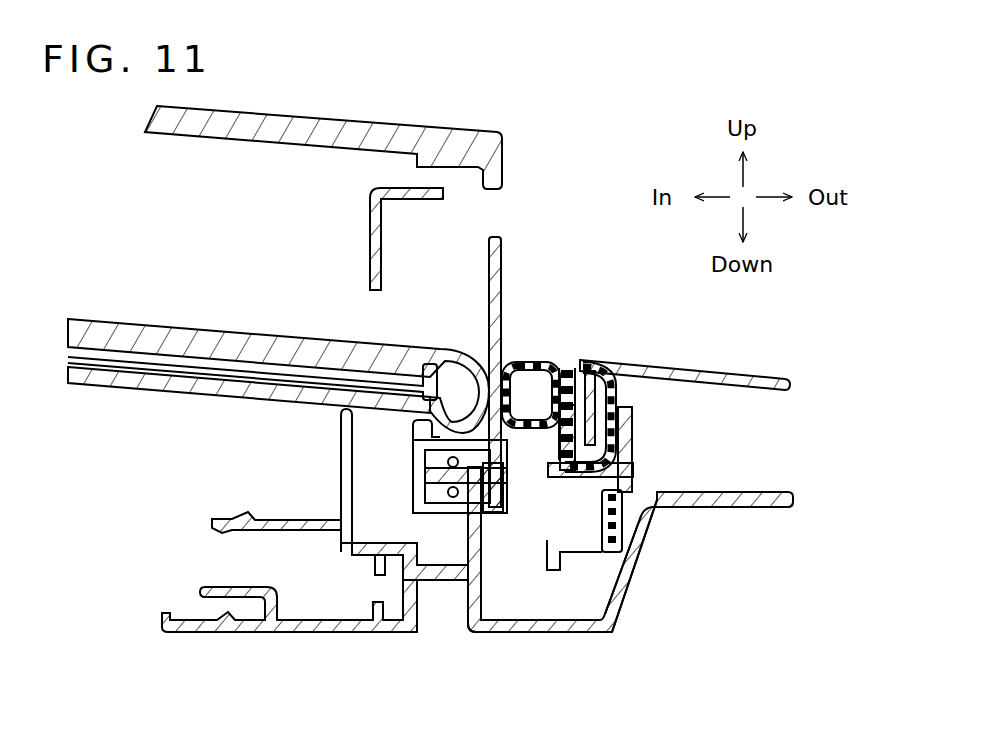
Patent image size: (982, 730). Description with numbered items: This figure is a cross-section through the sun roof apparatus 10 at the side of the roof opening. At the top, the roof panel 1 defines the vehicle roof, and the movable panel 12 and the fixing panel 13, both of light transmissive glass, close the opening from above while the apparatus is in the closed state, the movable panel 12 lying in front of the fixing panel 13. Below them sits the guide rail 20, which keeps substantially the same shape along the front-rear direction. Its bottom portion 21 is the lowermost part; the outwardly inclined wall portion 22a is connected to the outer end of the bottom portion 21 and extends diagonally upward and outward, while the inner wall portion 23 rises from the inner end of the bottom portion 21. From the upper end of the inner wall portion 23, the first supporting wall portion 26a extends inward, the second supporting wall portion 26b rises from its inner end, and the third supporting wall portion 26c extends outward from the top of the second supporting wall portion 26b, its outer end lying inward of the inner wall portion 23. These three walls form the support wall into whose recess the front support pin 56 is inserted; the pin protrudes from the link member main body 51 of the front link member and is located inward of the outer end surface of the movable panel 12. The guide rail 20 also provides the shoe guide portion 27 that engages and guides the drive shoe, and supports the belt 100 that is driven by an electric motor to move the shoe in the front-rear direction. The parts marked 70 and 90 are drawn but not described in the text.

The roof panel 1 is at (678, 365).
The sun roof apparatus 10 is at (604, 95).
The movable panel 12 is at (312, 118).
The fixing panel 13 is at (220, 328).
The guide rail 20 is at (323, 633).
The bottom portion 21 is at (535, 634).
The outwardly inclined wall portion 22a is at (637, 587).
The inner wall portion 23 is at (466, 598).
The first supporting wall portion 26a is at (443, 520).
The second supporting wall portion 26b is at (420, 474).
The third supporting wall portion 26c is at (413, 425).
The shoe guide portion 27 is at (341, 457).
The link member main body 51 is at (502, 252).
The front support pin 56 is at (506, 492).
The deflector 70 is at (370, 212).
The weather strip 90 is at (537, 362).
The belt 100 is at (622, 533).